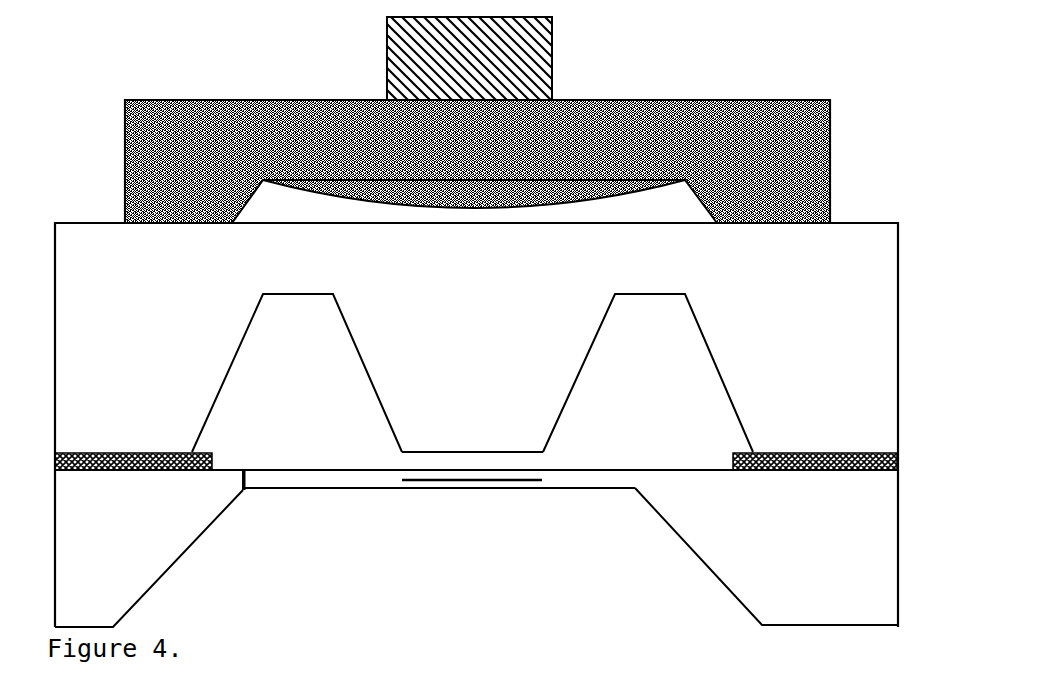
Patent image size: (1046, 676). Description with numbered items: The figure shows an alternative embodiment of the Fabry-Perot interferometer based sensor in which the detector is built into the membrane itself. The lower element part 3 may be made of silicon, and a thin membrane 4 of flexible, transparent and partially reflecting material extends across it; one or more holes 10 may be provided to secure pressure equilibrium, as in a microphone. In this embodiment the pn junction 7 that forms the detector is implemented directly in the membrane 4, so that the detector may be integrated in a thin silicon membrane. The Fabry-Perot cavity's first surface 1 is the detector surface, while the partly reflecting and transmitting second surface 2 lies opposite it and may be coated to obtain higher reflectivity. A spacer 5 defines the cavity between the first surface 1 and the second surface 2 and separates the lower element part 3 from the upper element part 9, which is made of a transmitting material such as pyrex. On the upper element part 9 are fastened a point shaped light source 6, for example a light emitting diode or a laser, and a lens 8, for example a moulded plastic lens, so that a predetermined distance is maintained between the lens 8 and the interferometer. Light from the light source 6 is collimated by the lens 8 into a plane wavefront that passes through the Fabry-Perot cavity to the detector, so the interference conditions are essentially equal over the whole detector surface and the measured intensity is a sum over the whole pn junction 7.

The first surface 1 is at (373, 468).
The second surface 2 is at (523, 452).
The lower element part 3 is at (476, 557).
The membrane 4 is at (593, 500).
The spacer 5 is at (908, 460).
The light source 6 is at (386, 58).
The pn junction 7 is at (493, 490).
The lens 8 is at (608, 167).
The upper element part 9 is at (476, 425).
The hole 10 is at (257, 500).